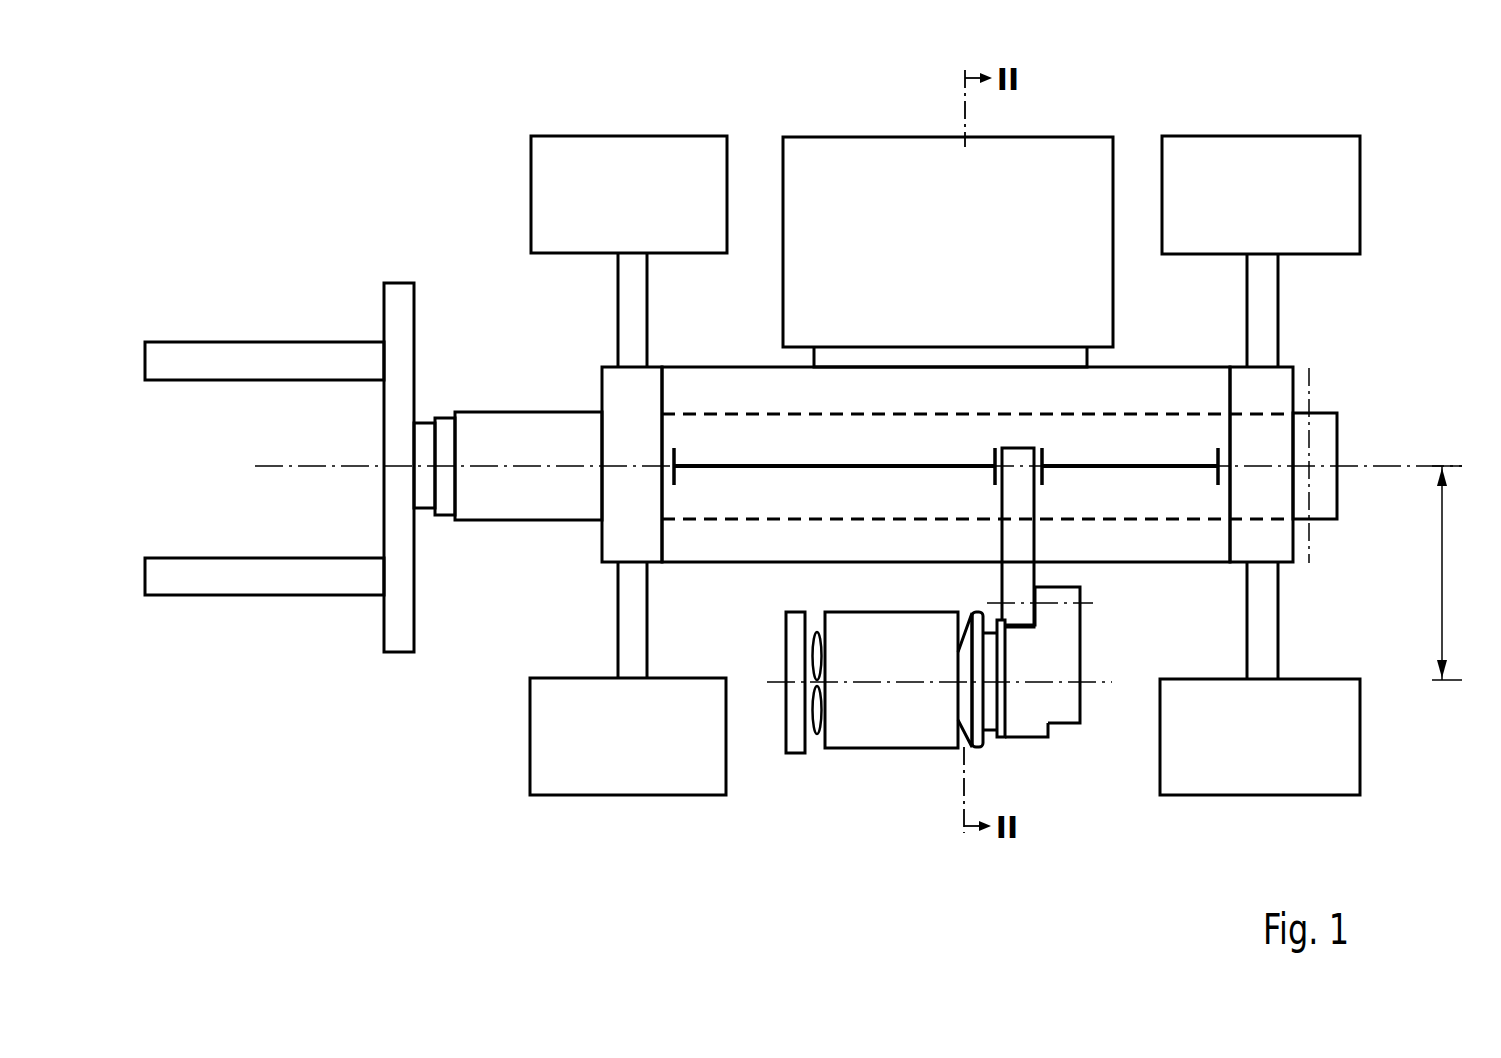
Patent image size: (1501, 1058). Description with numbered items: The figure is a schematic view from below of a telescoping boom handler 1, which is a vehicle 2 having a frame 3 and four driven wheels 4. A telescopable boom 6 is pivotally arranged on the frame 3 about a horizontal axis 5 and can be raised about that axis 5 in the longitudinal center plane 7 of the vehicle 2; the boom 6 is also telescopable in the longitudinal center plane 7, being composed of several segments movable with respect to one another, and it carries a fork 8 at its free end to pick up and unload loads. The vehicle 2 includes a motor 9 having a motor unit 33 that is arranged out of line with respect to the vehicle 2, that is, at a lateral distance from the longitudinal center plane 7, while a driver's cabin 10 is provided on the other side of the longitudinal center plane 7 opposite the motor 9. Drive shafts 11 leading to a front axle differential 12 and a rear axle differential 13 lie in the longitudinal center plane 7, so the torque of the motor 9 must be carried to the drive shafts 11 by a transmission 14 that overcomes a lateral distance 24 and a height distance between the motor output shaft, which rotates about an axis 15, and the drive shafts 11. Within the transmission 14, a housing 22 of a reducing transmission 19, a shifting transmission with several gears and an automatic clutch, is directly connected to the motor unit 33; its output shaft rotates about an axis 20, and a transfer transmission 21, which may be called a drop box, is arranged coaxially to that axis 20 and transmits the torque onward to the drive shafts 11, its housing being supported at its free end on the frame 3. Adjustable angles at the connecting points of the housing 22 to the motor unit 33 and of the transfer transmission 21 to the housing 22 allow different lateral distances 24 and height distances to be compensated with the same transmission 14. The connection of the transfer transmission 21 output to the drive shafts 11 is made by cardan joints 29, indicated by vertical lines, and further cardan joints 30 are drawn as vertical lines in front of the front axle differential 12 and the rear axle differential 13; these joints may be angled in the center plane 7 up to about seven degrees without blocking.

The telescoping boom handler 1 is at (420, 140).
The vehicle 2 is at (600, 561).
The frame 3 is at (758, 365).
The driven wheels 4 is at (644, 178).
The horizontal axis 5 is at (1310, 447).
The telescopable boom 6 is at (517, 430).
The longitudinal center plane 7 is at (283, 467).
The fork 8 is at (314, 330).
The motor 9 is at (869, 772).
The driver's cabin 10 is at (877, 137).
The drive shafts 11 is at (757, 470).
The front axle differential 12 is at (523, 558).
The rear axle differential 13 is at (1295, 483).
The transmission 14 is at (1027, 770).
The axis 15 is at (1090, 683).
The reducing transmission 19 is at (995, 737).
The axis 20 is at (970, 642).
The transfer transmission 21 is at (1046, 536).
The housing 22 is at (1050, 722).
The lateral distance 24 is at (1443, 562).
The cardan joints 29 is at (1042, 447).
The cardan joints 30 is at (675, 447).
The motor unit 33 is at (853, 738).